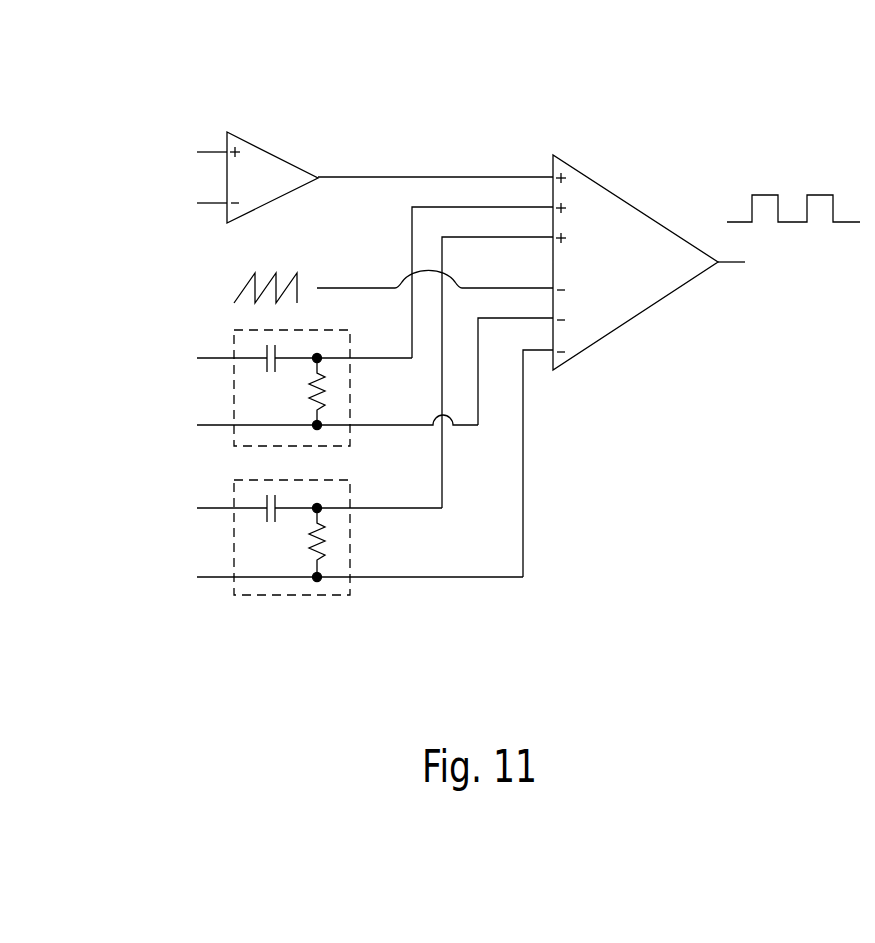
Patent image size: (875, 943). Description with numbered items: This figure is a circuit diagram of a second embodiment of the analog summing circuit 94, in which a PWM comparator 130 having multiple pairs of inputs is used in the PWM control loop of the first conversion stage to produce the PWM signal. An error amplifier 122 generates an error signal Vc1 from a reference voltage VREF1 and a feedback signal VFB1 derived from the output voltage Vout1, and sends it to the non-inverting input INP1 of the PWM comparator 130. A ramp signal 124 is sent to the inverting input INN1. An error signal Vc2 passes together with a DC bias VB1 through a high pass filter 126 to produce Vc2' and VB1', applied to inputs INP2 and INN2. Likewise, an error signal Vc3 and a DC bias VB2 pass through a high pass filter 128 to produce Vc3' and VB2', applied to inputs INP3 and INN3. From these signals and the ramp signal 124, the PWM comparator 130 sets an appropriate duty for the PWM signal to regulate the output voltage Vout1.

The analog summing circuit 94 is at (808, 128).
The error amplifier 122 is at (271, 152).
The ramp signal 124 is at (240, 283).
The high pass filter 126 is at (233, 344).
The high pass filter 128 is at (233, 494).
The PWM comparator 130 is at (636, 208).